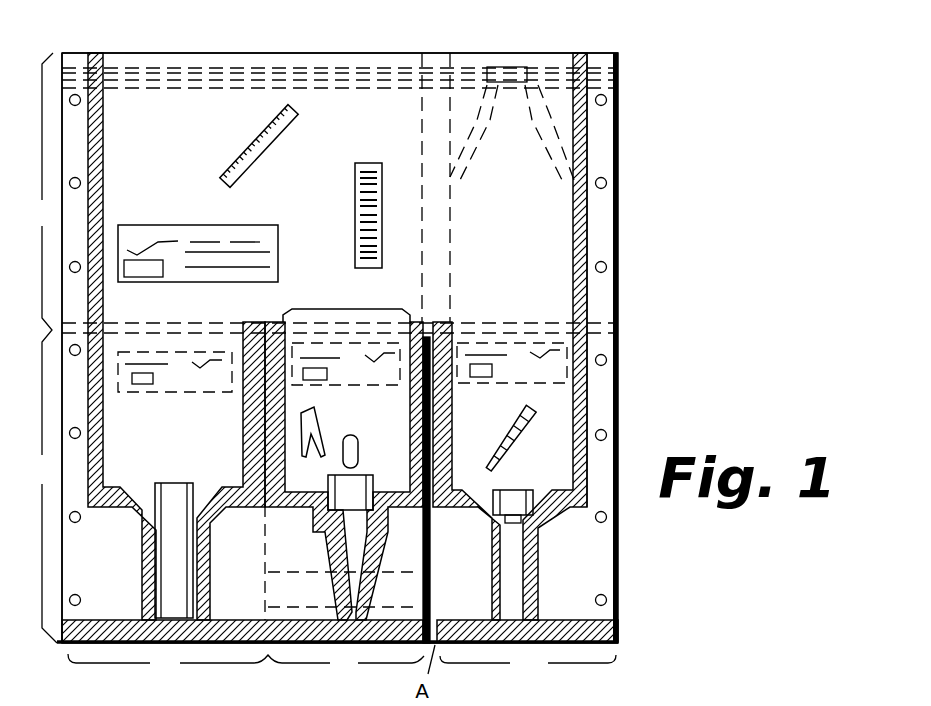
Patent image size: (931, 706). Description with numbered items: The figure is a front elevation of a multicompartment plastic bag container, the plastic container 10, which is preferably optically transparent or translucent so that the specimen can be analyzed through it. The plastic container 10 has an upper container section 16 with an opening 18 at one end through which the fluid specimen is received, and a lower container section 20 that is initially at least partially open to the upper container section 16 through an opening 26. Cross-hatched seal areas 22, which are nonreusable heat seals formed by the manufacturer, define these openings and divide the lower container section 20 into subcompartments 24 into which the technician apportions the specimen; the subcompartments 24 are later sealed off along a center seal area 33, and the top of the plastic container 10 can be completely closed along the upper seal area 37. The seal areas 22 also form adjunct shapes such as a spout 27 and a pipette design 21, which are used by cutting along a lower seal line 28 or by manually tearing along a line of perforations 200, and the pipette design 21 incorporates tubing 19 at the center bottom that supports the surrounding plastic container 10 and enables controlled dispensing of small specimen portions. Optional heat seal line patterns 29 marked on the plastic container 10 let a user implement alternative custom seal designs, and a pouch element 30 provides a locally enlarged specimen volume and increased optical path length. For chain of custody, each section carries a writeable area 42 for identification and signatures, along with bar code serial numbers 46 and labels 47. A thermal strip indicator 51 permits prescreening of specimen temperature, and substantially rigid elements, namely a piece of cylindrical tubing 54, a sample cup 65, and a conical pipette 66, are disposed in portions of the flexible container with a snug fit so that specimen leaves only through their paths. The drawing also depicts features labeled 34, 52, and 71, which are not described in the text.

The plastic container 10 is at (636, 167).
The upper container section 16 is at (40, 254).
The opening 18 is at (194, 53).
The tubing 19 is at (366, 480).
The lower container section 20 is at (41, 548).
The pipette design 21 is at (348, 608).
The seal areas 22 is at (265, 333).
The subcompartments 24 is at (342, 664).
The opening 26 is at (346, 302).
The spout 27 is at (520, 576).
The lower seal line 28 is at (620, 624).
The heat seal line patterns 29 is at (473, 148).
The pouch element 30 is at (607, 142).
The center seal area 33 is at (490, 333).
The mounting holes 34 is at (82, 184).
The upper seal area 37 is at (618, 70).
The writeable area 42 is at (280, 252).
The bar code serial numbers 46 is at (318, 378).
The labels 47 is at (368, 164).
The thermal strip indicator 51 is at (257, 146).
The capsule 52 is at (361, 442).
The cylindrical tubing 54 is at (172, 490).
The sample cup 65 is at (522, 490).
The conical pipette 66 is at (527, 428).
The wedge 71 is at (311, 447).
The perforations 200 is at (234, 620).